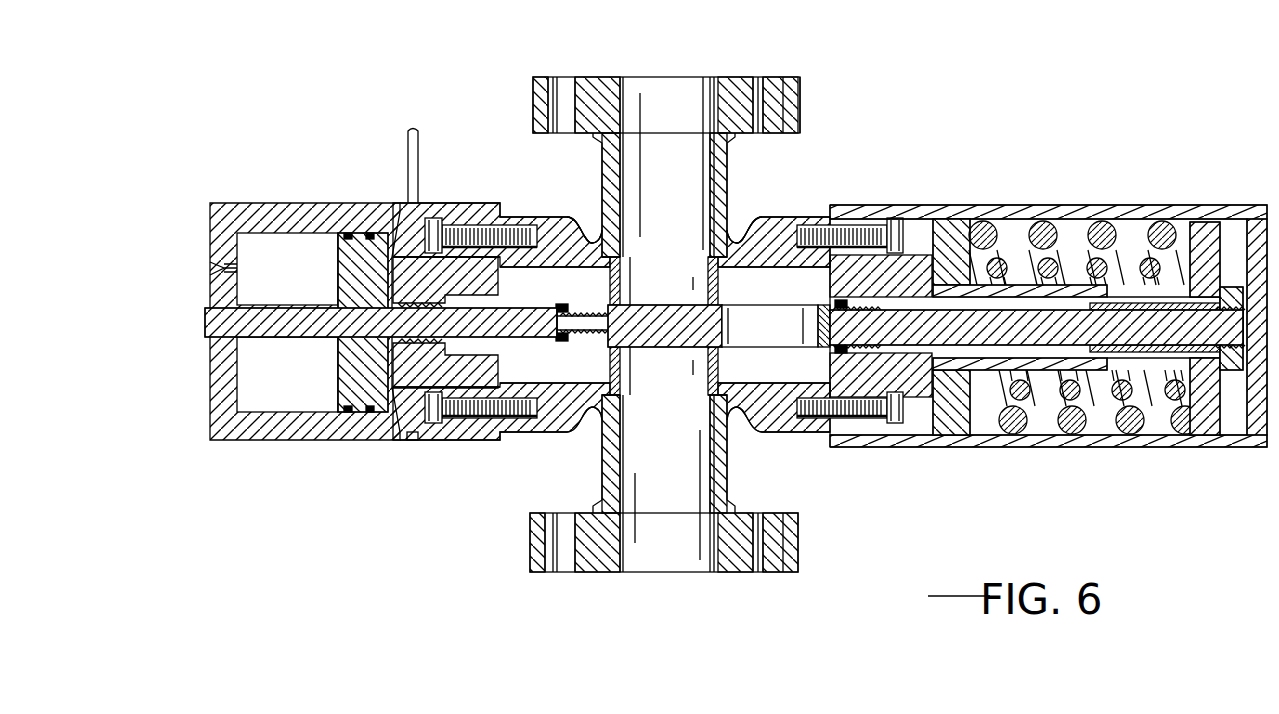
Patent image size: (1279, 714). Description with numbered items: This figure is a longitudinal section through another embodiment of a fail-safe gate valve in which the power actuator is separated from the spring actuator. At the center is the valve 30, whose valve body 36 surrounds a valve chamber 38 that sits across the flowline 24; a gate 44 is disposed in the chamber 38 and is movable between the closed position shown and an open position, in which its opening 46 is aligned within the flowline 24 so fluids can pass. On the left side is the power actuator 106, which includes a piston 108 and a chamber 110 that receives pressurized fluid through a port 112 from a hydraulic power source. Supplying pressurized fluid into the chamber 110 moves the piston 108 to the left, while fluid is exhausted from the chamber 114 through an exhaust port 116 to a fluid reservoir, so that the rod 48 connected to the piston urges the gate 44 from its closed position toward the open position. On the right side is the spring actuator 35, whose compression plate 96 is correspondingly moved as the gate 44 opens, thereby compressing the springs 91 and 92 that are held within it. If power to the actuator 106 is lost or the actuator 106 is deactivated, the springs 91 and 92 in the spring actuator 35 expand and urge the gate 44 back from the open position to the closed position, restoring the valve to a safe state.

The flowline 24 is at (680, 573).
The valve 30 is at (730, 77).
The spring actuator 35 is at (1012, 183).
The valve body 36 is at (802, 118).
The valve chamber 38 is at (740, 240).
The gate 44 is at (663, 302).
The opening 46 is at (786, 320).
The rod 48 is at (517, 338).
The spring 91 is at (1100, 232).
The spring 92 is at (1078, 262).
The spring compression plate 96 is at (1207, 225).
The power actuator 106 is at (308, 200).
The piston 108 is at (362, 243).
The chamber 110 is at (411, 412).
The port 112 is at (420, 138).
The chamber 114 is at (286, 392).
The exhaust port 116 is at (210, 270).